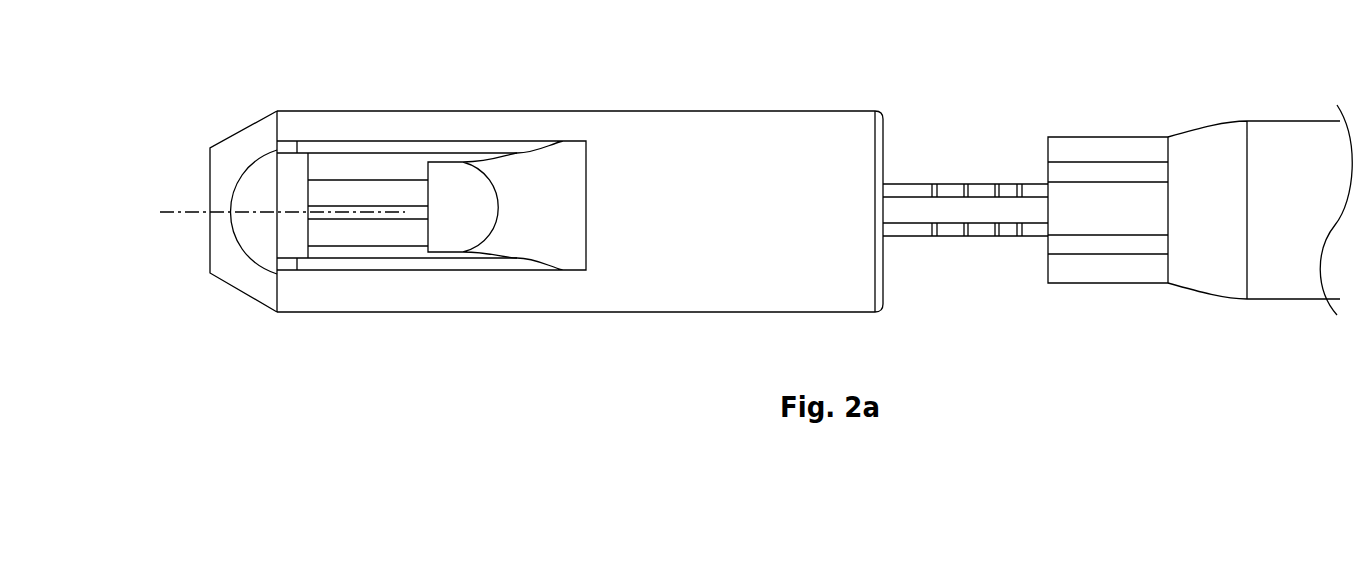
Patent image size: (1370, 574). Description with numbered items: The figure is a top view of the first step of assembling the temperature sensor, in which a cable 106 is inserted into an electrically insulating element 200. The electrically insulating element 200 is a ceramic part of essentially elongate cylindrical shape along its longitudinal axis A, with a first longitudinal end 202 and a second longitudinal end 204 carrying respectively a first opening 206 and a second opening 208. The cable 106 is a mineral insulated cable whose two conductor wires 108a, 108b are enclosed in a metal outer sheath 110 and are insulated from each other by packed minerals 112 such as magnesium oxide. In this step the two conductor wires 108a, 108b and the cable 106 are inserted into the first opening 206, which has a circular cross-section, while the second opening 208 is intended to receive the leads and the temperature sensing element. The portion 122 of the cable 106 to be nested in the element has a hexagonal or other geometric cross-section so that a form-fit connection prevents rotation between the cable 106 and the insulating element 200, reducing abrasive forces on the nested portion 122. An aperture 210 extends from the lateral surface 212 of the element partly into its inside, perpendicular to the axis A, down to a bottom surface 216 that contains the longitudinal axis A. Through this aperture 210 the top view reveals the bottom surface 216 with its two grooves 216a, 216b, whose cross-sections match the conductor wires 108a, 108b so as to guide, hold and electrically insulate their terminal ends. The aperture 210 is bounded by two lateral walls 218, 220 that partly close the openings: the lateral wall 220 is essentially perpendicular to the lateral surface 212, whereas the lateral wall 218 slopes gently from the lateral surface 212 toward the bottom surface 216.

The longitudinal axis A is at (180, 212).
The cable 106 is at (1268, 119).
The conductor wire 108a is at (975, 238).
The conductor wire 108b is at (983, 182).
The outer sheath 110 is at (1292, 225).
The packed minerals 112 is at (1048, 263).
The portion of the cable 122 is at (1048, 128).
The electrically insulating element 200 is at (585, 111).
The longitudinal end 202 is at (883, 293).
The longitudinal end 204 is at (210, 173).
The first opening 206 is at (884, 138).
The second opening 208 is at (207, 240).
The aperture 210 is at (407, 187).
The lateral surface 212 is at (778, 167).
The bottom surface 216 is at (375, 217).
The groove 216a is at (335, 235).
The groove 216b is at (332, 193).
The lateral wall 218 is at (563, 208).
The lateral wall 220 is at (287, 177).